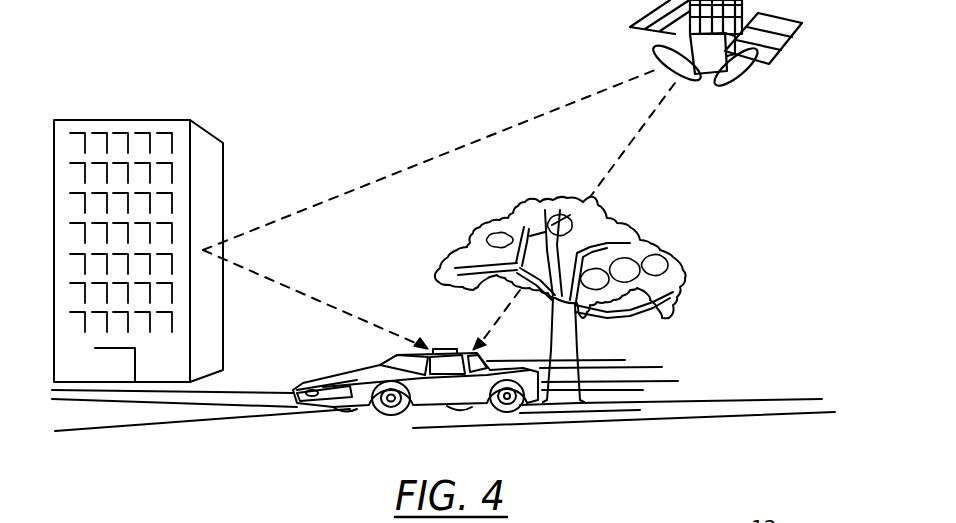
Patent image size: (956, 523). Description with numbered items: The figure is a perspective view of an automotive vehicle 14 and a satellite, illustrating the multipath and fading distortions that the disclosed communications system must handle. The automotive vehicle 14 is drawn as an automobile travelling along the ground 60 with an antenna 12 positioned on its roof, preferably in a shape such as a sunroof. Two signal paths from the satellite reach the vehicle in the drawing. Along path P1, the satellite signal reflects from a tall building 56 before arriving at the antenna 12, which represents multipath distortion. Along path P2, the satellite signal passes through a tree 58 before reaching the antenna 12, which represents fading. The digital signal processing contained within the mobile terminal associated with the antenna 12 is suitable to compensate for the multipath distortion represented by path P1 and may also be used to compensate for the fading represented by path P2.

The antenna 12 is at (443, 349).
The automotive vehicle 14 is at (432, 400).
The building 56 is at (212, 143).
The tree 58 is at (573, 342).
The ground/road surface 60 is at (443, 440).
The path P1 is at (458, 149).
The path P2 is at (628, 148).